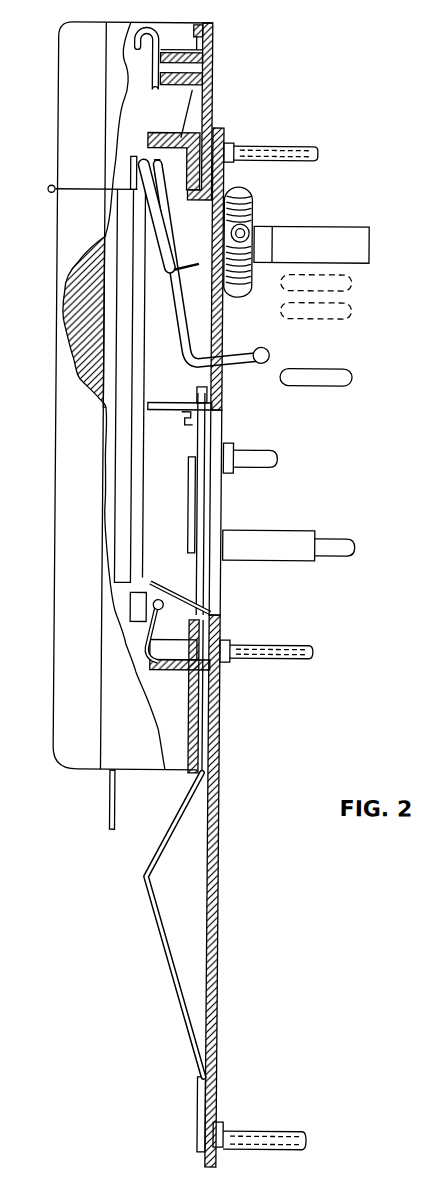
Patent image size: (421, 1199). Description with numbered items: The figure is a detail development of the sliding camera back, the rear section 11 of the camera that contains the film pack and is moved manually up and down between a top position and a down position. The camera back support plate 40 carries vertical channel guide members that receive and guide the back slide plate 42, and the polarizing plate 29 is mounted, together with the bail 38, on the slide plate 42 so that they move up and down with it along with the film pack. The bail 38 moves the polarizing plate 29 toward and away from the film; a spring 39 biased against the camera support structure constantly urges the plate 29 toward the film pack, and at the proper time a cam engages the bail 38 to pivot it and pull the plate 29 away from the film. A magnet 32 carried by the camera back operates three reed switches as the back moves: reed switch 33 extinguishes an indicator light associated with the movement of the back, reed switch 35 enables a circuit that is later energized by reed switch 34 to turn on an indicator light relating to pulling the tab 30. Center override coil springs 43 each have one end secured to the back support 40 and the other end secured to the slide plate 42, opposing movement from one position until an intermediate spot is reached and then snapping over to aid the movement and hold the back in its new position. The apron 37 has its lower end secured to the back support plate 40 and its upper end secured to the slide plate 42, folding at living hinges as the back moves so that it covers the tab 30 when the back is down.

The rear section 11 is at (50, 130).
The polarizing plate 29 is at (128, 278).
The tab 30 is at (115, 806).
The magnet 32 is at (337, 227).
The reed switch 33 is at (357, 283).
The reed switch 34 is at (357, 313).
The reed switch 35 is at (357, 381).
The apron 37 is at (166, 933).
The bail 38 is at (279, 342).
The spring 39 is at (163, 253).
The camera back support plate 40 is at (224, 135).
The back slide plate 42 is at (212, 88).
The center override coil springs 43 is at (255, 212).